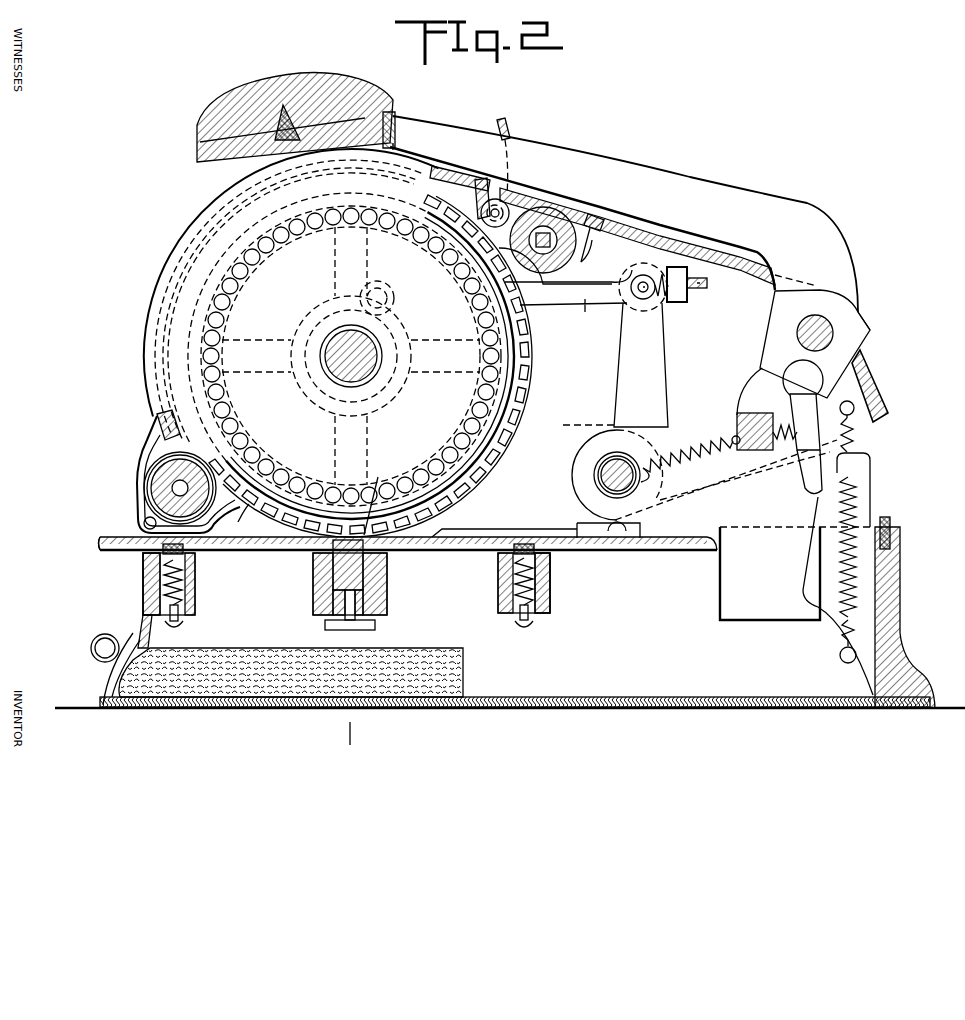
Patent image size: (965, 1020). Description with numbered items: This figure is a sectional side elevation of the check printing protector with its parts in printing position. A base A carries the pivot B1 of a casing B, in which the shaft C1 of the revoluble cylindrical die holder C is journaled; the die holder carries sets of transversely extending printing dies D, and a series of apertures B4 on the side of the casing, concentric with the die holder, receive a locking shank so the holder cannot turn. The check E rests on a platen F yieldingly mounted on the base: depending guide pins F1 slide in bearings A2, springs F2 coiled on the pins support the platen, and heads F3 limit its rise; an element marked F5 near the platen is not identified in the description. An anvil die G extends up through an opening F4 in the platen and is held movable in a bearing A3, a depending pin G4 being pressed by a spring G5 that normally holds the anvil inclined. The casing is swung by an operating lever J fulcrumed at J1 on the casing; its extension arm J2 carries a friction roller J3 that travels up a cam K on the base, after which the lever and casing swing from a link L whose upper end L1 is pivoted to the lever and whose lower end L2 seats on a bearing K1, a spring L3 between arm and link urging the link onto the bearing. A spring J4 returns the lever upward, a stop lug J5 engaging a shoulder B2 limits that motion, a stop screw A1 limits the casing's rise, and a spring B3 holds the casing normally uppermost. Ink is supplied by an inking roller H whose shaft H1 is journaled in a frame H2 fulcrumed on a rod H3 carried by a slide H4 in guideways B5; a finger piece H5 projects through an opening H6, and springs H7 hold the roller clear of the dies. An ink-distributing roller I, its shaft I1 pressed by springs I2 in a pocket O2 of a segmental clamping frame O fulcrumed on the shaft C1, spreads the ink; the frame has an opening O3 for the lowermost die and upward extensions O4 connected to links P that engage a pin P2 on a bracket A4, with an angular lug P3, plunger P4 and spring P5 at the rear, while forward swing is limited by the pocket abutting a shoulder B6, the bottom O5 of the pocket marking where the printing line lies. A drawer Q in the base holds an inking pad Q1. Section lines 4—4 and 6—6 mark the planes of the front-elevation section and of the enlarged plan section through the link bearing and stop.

The base A is at (480, 616).
The stop screw A1 is at (893, 545).
The bearings A2 is at (195, 590).
The guideway or bearing A3 is at (382, 602).
The bracket A4 is at (665, 366).
The casing B is at (748, 278).
The pivot B1 is at (590, 460).
The shoulder B2 is at (870, 360).
The spring B3 is at (397, 130).
The apertures B4 is at (284, 231).
The guideways B5 is at (600, 213).
The shoulder B6 is at (158, 424).
The die holder C is at (528, 346).
The shaft C1 is at (351, 356).
The printing dies D is at (500, 440).
The check E is at (508, 534).
The platen F is at (458, 548).
The guide pins F1 is at (145, 612).
The springs F2 is at (143, 576).
The heads F3 is at (180, 625).
The opening F4 is at (386, 552).
The bracket F5 is at (582, 531).
The anvil die G is at (334, 566).
The depending pin G4 is at (332, 612).
The spring G5 is at (376, 628).
The inking roller H is at (556, 220).
The shaft H1 is at (542, 224).
The frame H2 is at (505, 200).
The rod H3 is at (478, 205).
The slide H4 is at (588, 240).
The finger piece H5 is at (508, 126).
The opening H6 is at (518, 167).
The springs H7 is at (484, 168).
The ink-distributing roller I is at (146, 497).
The shaft I1 is at (165, 488).
The springs I2 is at (143, 522).
The operating lever J is at (745, 200).
The fulcrum J1 is at (290, 90).
The extension arm J2 is at (855, 444).
The friction roller J3 is at (870, 463).
The spring J4 is at (700, 440).
The stop lug J5 is at (872, 332).
The cam K is at (816, 548).
The bearing K1 is at (858, 494).
The link L is at (847, 401).
The upper end L1 is at (762, 369).
The lower end L2 is at (822, 484).
The spring L3 is at (778, 412).
The segmental clamping frame O is at (408, 530).
The pocket O2 is at (236, 515).
The opening O3 is at (376, 495).
The upward extensions O4 is at (366, 296).
The bottom O5 is at (110, 536).
The links P is at (585, 312).
The pin P2 is at (643, 303).
The angular lug P3 is at (680, 303).
The plunger P4 is at (700, 278).
The spring P5 is at (670, 275).
The drawer Q is at (463, 676).
The inking pad Q1 is at (302, 656).
The section line 6 is at (640, 292).
The section line 4 is at (347, 752).